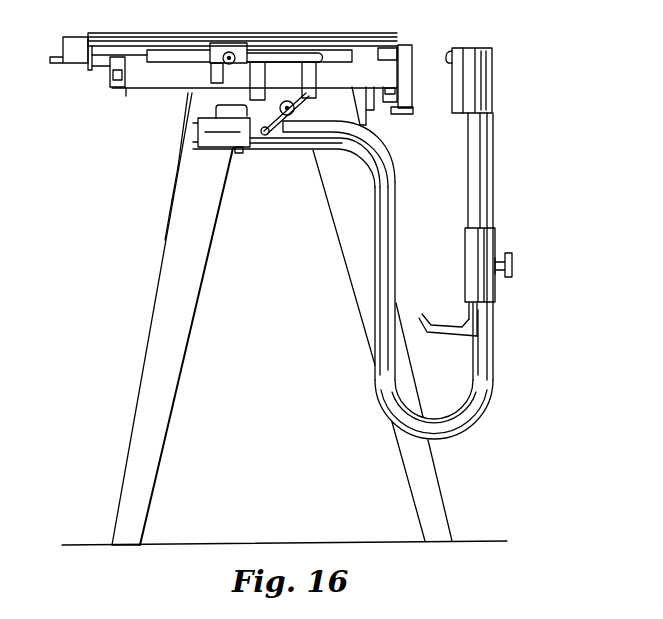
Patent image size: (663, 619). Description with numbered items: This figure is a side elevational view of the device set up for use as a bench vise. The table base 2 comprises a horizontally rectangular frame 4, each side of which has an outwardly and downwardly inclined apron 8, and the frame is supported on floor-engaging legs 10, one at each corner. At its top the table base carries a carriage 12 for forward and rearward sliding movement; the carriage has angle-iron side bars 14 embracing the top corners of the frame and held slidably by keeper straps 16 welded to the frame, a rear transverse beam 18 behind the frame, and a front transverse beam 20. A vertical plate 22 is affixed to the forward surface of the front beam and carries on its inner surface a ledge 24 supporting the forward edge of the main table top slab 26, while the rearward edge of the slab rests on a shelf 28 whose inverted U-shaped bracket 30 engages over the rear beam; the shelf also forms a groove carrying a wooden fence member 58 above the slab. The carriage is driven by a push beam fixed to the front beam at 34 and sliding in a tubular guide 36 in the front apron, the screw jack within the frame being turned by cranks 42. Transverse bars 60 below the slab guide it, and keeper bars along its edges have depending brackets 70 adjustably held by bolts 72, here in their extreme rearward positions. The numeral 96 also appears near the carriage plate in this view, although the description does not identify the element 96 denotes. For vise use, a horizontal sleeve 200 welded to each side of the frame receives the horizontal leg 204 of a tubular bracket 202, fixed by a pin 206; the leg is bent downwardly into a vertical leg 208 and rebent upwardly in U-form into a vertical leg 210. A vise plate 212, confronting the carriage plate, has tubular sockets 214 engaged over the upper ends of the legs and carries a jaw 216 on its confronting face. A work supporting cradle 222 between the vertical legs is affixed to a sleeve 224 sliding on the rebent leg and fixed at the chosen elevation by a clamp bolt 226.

The table base 2 is at (163, 259).
The frame 4 is at (189, 107).
The apron 8 is at (163, 194).
The legs 10 is at (128, 497).
The carriage 12 is at (157, 93).
The side bars 14 is at (137, 88).
The keeper straps 16 is at (312, 78).
The rear transverse beam 18 is at (115, 95).
The front transverse beam 20 is at (383, 105).
The plate 22 is at (410, 63).
The ledge 24 is at (387, 47).
The main table top slab 26 is at (299, 35).
The shelf 28 is at (98, 63).
The bracket 30 is at (107, 77).
The push beam forward end fixing 34 is at (367, 153).
The tubular guide 36 is at (340, 140).
The cranks 42 is at (276, 135).
The fence member 58 is at (75, 37).
The bars 60 is at (211, 78).
The depending bracket 70 is at (238, 38).
The bolt 72 is at (229, 50).
The stop member 96 is at (415, 106).
The sleeve 200 is at (213, 148).
The tubular bracket 202 is at (494, 385).
The horizontal leg 204 is at (302, 150).
The pin 206 is at (239, 149).
The vertical leg 208 is at (384, 229).
The vertical leg 210 is at (482, 183).
The vise plate 212 is at (465, 50).
The tubular sockets 214 is at (488, 81).
The jaw 216 is at (454, 48).
The work supporting cradle 222 is at (444, 322).
The sleeve 224 is at (497, 236).
The clamp bolt 226 is at (513, 265).